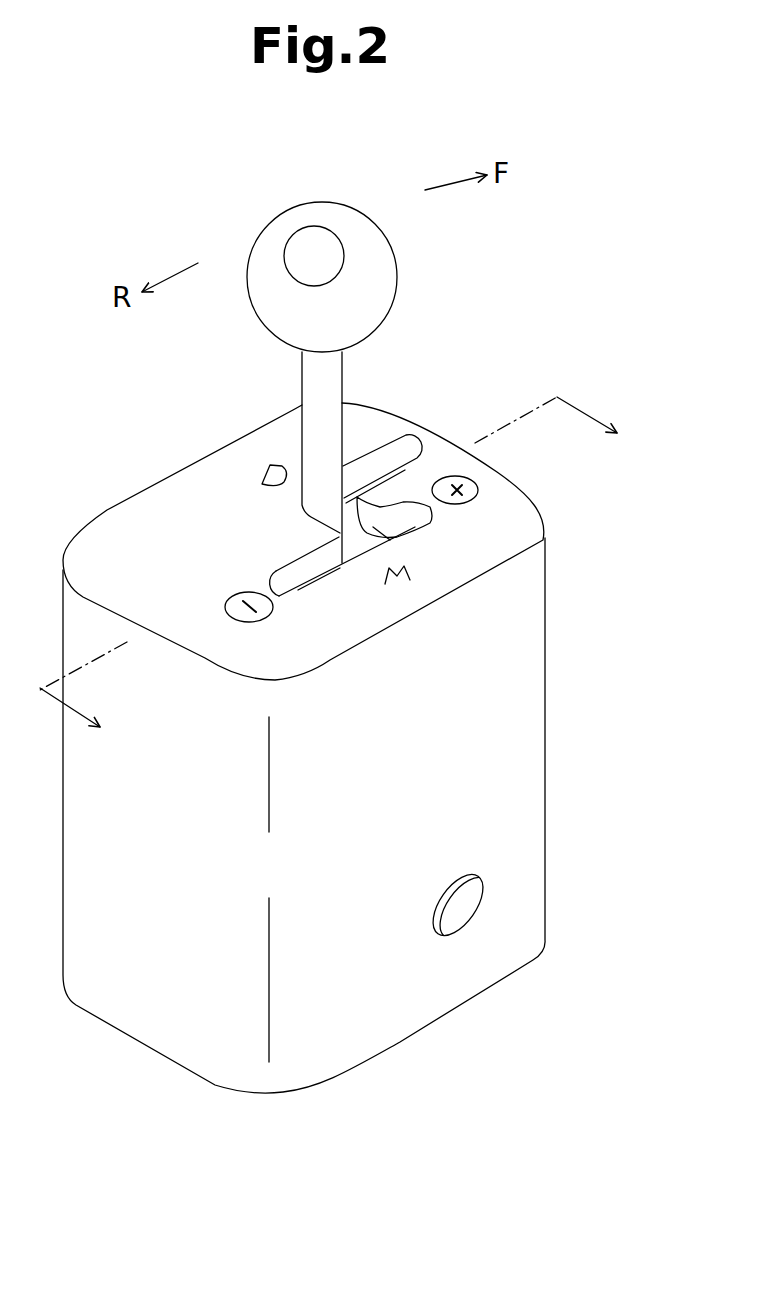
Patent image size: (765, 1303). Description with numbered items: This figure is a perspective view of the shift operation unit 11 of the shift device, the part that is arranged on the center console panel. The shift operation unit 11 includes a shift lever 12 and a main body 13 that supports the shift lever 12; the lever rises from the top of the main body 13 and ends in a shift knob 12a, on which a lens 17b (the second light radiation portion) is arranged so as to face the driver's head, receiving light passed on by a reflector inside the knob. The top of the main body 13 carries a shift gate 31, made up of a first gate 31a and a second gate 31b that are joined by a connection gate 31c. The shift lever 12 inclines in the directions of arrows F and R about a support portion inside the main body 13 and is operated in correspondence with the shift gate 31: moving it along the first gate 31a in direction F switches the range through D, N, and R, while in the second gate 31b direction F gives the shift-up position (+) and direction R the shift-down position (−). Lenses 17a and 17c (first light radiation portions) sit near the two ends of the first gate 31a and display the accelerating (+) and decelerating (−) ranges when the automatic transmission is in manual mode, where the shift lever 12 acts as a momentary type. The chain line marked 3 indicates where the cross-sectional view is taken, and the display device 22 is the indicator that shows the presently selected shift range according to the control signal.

The section line 3— 3 is at (342, 574).
The shift operation unit 11 is at (165, 188).
The shift lever 12 is at (306, 390).
The shift knob 12a is at (390, 258).
The main body 13 is at (103, 530).
The lens (first light radiation portion) 17a is at (478, 485).
The lens (second light radiation portion) 17b is at (312, 237).
The lens (first light radiation portion) 17c is at (230, 616).
The display device 22 is at (533, 704).
The shift gate 31 is at (302, 533).
The first gate 31a is at (413, 444).
The second gate 31b is at (297, 580).
The connection gate 31c is at (398, 530).